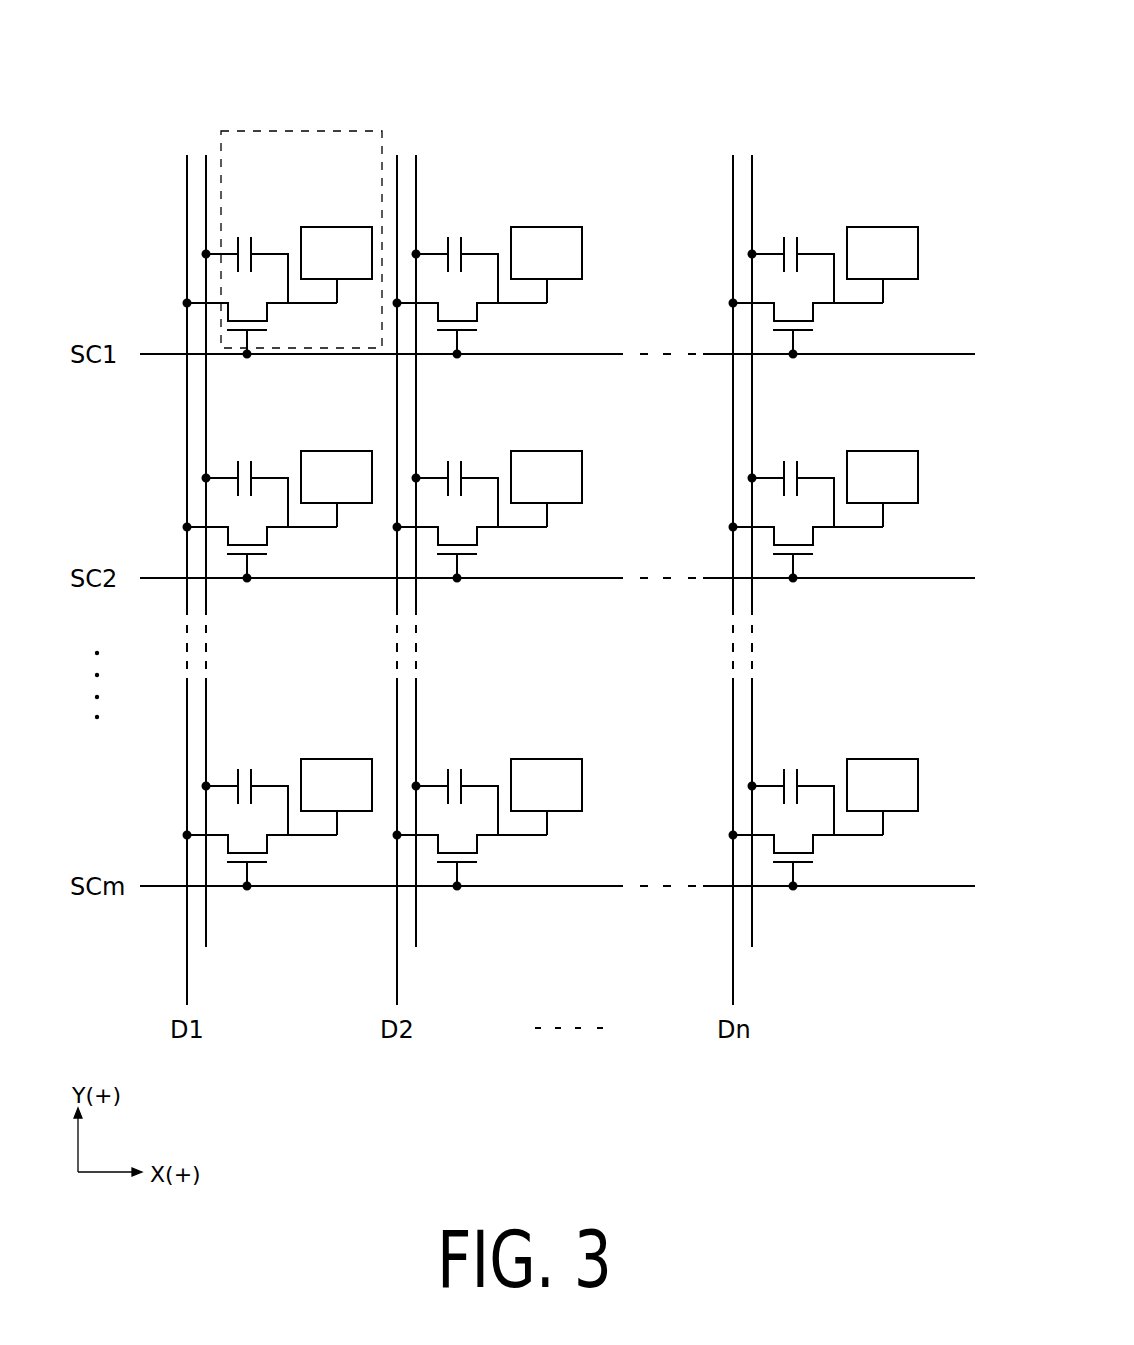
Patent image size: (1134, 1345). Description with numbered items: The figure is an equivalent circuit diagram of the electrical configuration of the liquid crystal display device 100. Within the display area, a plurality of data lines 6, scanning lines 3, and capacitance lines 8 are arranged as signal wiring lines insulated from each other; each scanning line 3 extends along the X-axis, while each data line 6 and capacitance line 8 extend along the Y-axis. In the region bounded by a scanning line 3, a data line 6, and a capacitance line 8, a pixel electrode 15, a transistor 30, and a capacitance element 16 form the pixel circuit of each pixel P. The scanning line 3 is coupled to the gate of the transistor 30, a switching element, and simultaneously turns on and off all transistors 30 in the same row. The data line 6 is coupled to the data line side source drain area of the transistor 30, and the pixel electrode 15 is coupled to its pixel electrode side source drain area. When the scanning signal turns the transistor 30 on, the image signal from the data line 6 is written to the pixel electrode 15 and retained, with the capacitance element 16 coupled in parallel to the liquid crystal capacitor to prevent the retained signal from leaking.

The liquid crystal display device 100 is at (935, 23).
The pixel P is at (311, 130).
The scanning line 3 is at (960, 352).
The data line 6 is at (187, 963).
The capacitance line 8 is at (206, 922).
The pixel electrode 15 is at (338, 238).
The capacitance element 16 is at (247, 231).
The transistor 30 is at (277, 326).